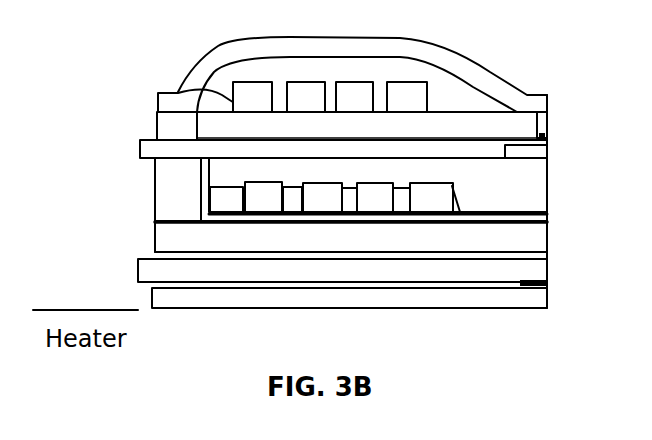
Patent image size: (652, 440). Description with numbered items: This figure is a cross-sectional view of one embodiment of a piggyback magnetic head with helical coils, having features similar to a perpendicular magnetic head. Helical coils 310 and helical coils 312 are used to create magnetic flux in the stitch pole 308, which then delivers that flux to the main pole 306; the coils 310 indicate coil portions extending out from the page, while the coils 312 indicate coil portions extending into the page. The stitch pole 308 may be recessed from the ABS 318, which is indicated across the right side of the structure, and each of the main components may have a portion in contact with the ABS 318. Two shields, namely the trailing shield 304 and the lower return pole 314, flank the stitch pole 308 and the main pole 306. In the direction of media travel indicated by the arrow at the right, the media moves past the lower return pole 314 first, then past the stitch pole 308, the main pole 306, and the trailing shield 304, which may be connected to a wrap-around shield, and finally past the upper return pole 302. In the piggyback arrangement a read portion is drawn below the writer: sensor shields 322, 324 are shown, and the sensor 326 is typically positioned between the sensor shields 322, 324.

The upper return pole 302 is at (476, 65).
The trailing shield 304 is at (550, 123).
The main pole 306 is at (547, 142).
The stitch pole 308 is at (498, 158).
The helical coils 310 is at (178, 92).
The helical coils 312 is at (247, 178).
The lower return pole 314 is at (387, 245).
The ABS 318 is at (548, 227).
The sensor shield 322 is at (137, 260).
The sensor shield 324 is at (152, 295).
The sensor 326 is at (545, 281).